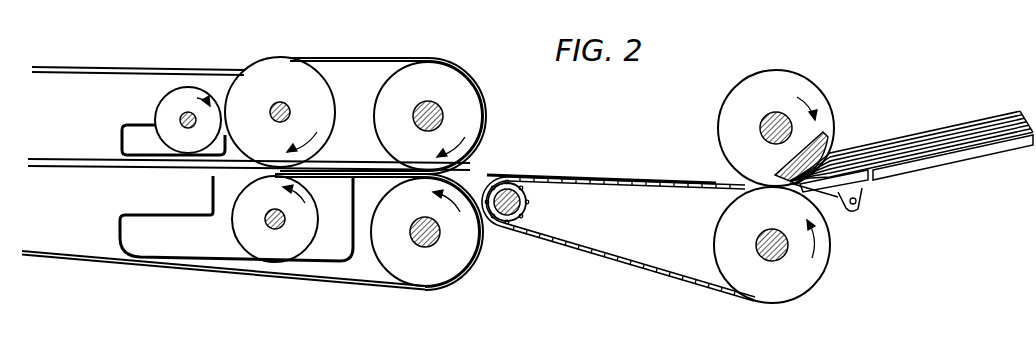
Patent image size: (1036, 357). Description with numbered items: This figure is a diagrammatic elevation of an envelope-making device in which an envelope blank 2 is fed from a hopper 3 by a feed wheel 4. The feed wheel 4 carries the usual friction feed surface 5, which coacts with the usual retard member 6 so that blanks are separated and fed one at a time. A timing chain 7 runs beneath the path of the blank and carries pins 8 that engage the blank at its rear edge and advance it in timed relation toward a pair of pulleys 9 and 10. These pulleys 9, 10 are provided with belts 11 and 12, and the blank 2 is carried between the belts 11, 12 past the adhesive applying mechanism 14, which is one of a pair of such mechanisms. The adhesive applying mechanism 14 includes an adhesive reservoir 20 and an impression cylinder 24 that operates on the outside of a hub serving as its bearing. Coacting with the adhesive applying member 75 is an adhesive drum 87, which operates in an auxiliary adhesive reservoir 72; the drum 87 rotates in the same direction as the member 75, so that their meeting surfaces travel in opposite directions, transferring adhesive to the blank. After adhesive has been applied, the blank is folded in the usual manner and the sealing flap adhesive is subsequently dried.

The blank 2 is at (157, 168).
The hopper 3 is at (948, 152).
The feed wheel 4 is at (788, 85).
The friction feed surface 5 is at (825, 131).
The retard member 6 is at (815, 176).
The timing chain 7 is at (565, 243).
The pins 8 is at (655, 180).
The pulley 9 is at (450, 83).
The pulley 10 is at (445, 263).
The belt 11 is at (338, 167).
The belt 12 is at (372, 177).
The adhesive applying mechanism 14 is at (295, 75).
The adhesive reservoir 20 is at (203, 260).
The impression cylinder 24 is at (288, 240).
The auxiliary adhesive reservoir 72 is at (124, 125).
The adhesive applying member 75 is at (263, 57).
The adhesive drum 87 is at (184, 98).